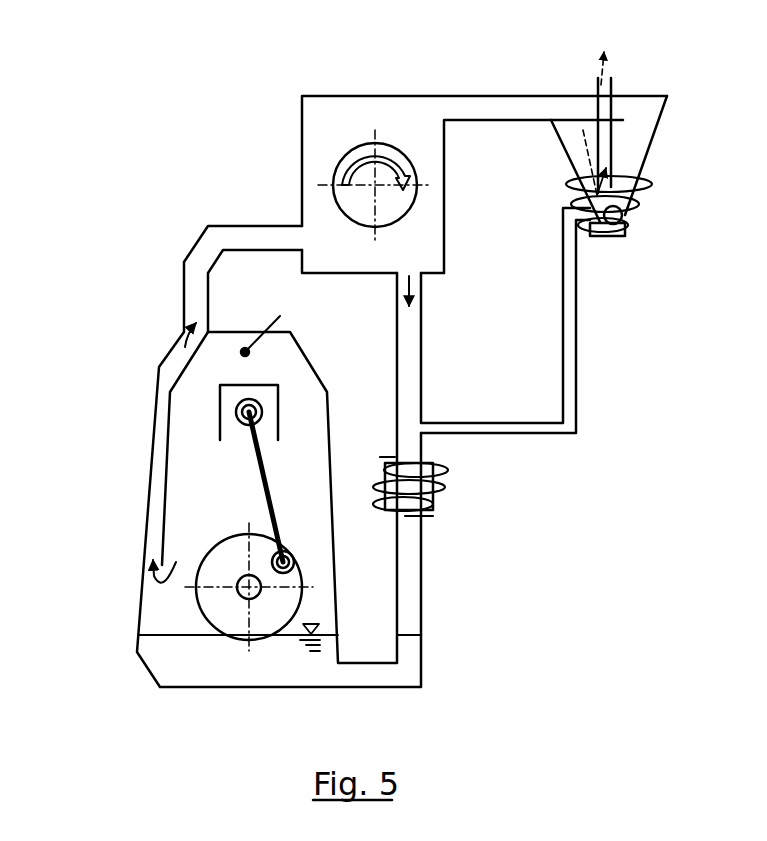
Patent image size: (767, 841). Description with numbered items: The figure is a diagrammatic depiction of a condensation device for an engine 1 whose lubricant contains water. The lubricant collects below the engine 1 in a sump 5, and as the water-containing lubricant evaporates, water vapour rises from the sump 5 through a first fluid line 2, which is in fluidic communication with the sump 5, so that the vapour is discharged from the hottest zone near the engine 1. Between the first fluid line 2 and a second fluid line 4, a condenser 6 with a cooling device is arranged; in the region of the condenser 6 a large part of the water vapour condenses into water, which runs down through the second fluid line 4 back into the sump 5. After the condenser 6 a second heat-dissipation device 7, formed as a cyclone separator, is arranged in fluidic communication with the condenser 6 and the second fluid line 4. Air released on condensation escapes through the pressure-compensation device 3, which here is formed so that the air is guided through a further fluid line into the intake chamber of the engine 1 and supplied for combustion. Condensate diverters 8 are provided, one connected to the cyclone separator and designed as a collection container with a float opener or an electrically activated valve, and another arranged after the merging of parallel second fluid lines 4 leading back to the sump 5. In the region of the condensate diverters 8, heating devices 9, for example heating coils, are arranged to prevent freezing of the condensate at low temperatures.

The engine 1 is at (212, 482).
The first fluid line 2 is at (165, 402).
The pressure-compensation device 3 is at (608, 110).
The second fluid line 4 is at (412, 562).
The sump 5 is at (185, 657).
The condenser 6 is at (320, 148).
The second heat-dissipation device 7 is at (623, 136).
The condensate diverter 8 is at (612, 229).
The heating device 9 is at (647, 188).